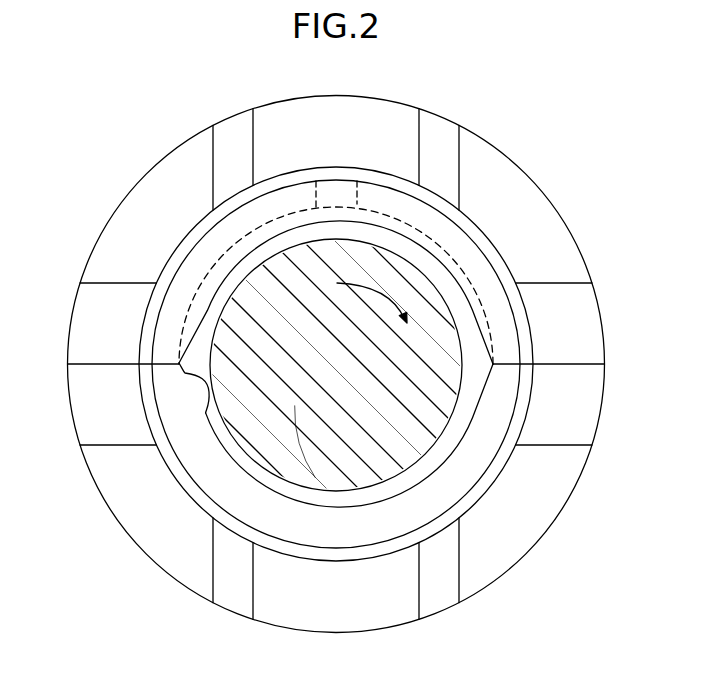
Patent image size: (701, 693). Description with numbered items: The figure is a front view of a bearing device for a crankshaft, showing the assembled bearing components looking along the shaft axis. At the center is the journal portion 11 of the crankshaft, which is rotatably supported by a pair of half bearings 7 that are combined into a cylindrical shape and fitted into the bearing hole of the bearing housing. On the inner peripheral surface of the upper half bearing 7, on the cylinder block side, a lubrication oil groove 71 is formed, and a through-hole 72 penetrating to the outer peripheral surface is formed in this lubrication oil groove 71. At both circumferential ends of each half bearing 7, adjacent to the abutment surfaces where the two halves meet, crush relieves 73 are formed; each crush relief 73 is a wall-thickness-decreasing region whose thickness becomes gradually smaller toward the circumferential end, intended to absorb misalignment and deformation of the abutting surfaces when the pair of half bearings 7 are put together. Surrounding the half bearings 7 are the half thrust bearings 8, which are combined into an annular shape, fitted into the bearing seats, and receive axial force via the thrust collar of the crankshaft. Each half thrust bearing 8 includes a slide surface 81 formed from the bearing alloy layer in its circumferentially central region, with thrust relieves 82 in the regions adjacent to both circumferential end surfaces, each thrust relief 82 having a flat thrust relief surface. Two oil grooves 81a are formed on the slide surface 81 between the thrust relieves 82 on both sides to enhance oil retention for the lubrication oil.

The half bearing 7 is at (213, 238).
The half thrust bearing 8 is at (497, 172).
The journal portion 11 is at (417, 430).
The lubrication oil groove 71 is at (191, 313).
The through-hole 72 is at (341, 181).
The crush relief 73 is at (206, 408).
The slide surface 81 is at (533, 207).
The oil groove 81a is at (235, 128).
The thrust relief 82 is at (92, 323).